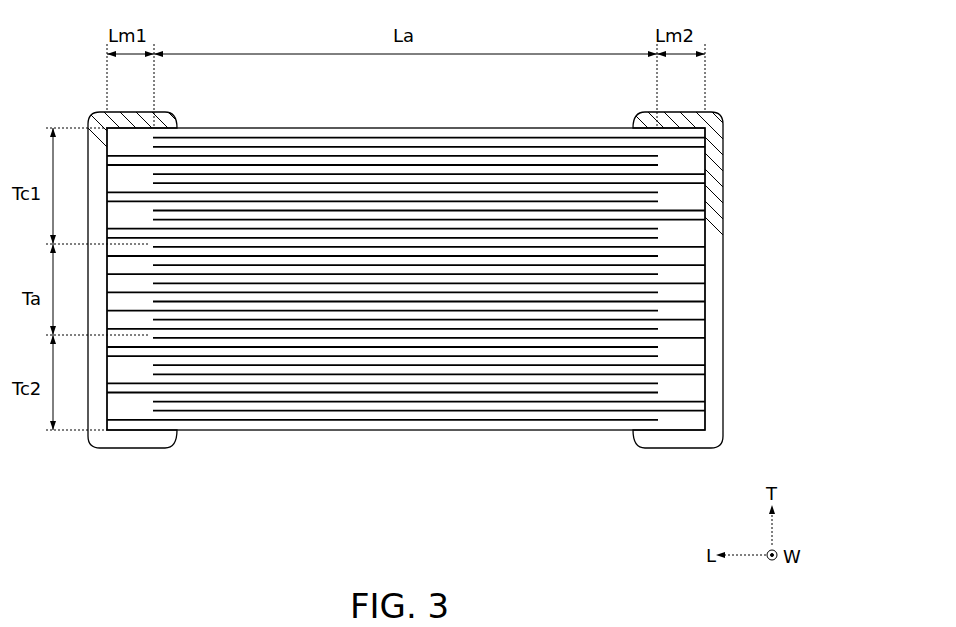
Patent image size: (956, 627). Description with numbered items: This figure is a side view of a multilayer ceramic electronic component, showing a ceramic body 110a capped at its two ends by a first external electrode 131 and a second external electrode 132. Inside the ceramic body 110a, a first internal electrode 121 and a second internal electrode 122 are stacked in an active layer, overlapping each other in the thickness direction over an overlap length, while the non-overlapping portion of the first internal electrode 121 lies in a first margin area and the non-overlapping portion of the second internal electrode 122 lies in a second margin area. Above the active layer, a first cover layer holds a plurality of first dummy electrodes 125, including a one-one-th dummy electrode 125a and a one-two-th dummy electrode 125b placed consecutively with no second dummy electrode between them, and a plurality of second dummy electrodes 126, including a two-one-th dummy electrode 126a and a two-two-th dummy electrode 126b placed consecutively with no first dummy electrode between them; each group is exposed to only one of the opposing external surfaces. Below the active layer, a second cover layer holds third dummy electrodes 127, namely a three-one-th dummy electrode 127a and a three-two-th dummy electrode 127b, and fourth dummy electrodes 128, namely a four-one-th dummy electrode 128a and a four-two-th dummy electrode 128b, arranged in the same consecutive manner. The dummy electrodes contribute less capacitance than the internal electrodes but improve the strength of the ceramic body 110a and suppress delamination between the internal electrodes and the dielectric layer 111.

The ceramic body 110a is at (406, 120).
The first external electrode 131 is at (97, 111).
The second external electrode 132 is at (716, 111).
The dielectric layer 111 is at (660, 236).
The first internal electrode 121 is at (652, 252).
The second internal electrode 122 is at (705, 263).
The first dummy electrodes 125 is at (802, 166).
The 1-1-th dummy electrode 125a is at (668, 178).
The 1-2-th dummy electrode 125b is at (705, 183).
The second dummy electrodes 126 is at (802, 107).
The 2-1-th dummy electrode 126a is at (708, 135).
The 2-2-th dummy electrode 126b is at (660, 160).
The third dummy electrodes 127 is at (802, 428).
The 3-1-th dummy electrode 127a is at (658, 420).
The 3-2-th dummy electrode 127b is at (656, 437).
The fourth dummy electrodes 128 is at (802, 370).
The 4-1-th dummy electrode 128a is at (709, 414).
The 4-2-th dummy electrode 128b is at (707, 416).